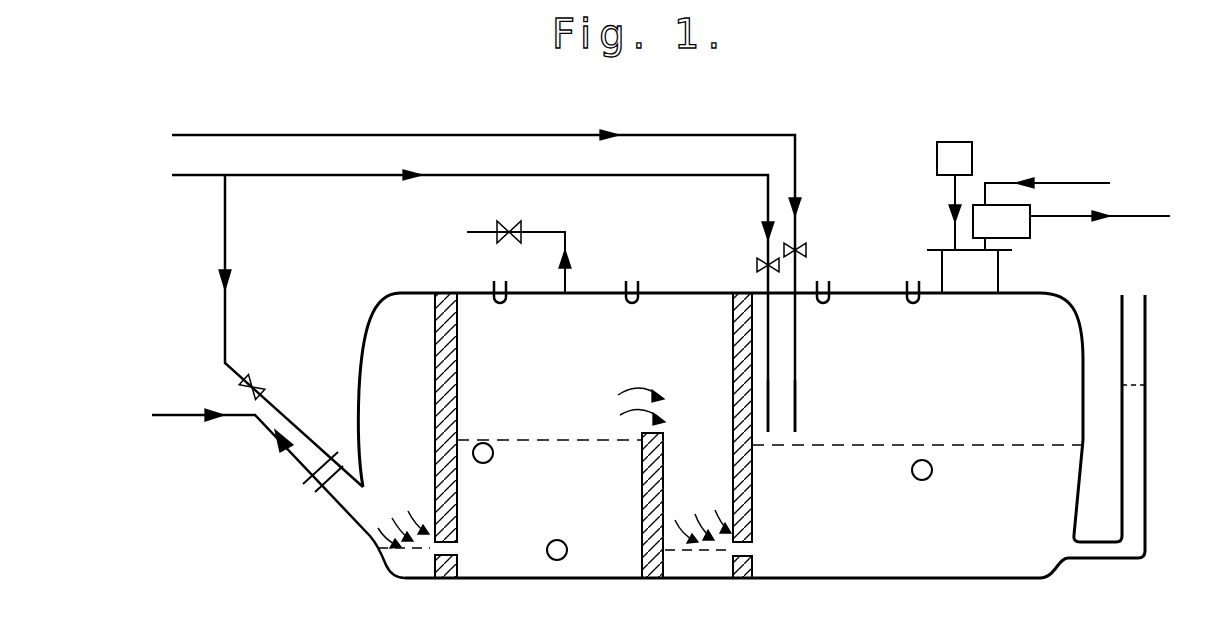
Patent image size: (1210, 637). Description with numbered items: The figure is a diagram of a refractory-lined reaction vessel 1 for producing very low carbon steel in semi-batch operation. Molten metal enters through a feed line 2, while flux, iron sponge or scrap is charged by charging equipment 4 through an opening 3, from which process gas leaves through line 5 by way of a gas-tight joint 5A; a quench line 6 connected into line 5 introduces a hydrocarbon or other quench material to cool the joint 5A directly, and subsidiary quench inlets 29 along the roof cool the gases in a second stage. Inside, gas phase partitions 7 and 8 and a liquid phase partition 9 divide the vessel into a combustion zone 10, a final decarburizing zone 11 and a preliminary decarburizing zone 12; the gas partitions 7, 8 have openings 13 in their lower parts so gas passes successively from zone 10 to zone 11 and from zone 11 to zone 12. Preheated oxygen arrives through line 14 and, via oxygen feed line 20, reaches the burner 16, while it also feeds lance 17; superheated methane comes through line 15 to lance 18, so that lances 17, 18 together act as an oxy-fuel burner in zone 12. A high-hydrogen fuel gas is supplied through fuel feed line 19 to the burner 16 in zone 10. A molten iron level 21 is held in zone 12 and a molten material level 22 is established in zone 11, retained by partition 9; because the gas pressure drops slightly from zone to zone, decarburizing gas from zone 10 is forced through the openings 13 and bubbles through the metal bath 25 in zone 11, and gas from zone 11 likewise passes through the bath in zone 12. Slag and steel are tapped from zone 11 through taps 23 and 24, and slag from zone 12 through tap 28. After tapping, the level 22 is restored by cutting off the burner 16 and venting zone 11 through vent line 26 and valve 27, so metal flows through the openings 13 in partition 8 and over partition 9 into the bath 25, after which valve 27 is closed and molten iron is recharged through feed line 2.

The reaction vessel 1 is at (862, 578).
The feed line 2 is at (1127, 509).
The opening 3 is at (969, 271).
The charging equipment 4 is at (950, 157).
The gas removal line 5 is at (1100, 206).
The gas-tight joint 5A is at (1001, 227).
The quench line 6 is at (1047, 181).
The gas phase partition 7 is at (458, 345).
The gas phase partition 8 is at (733, 347).
The liquid phase partition 9 is at (663, 480).
The combustion zone 10 is at (402, 421).
The final decarburizing zone 11 is at (612, 414).
The preliminary decarburizing zone 12 is at (947, 417).
The openings 13 is at (457, 548).
The oxygen line 14 is at (475, 318).
The fuel line 15 is at (489, 267).
The burner 16 is at (333, 480).
The lance 17 is at (770, 420).
The lance 18 is at (797, 340).
The fuel feed line 19 is at (207, 403).
The oxygen feed line 20 is at (278, 488).
The molten iron level 21 is at (998, 445).
The molten material level 22 is at (548, 438).
The slag tap 23 is at (500, 459).
The steel tap 24 is at (574, 551).
The metal bath 25 is at (546, 510).
The vent line 26 is at (534, 262).
The valve 27 is at (509, 218).
The slag tap 28 is at (940, 472).
The subsidiary quench inlets 29 is at (493, 284).